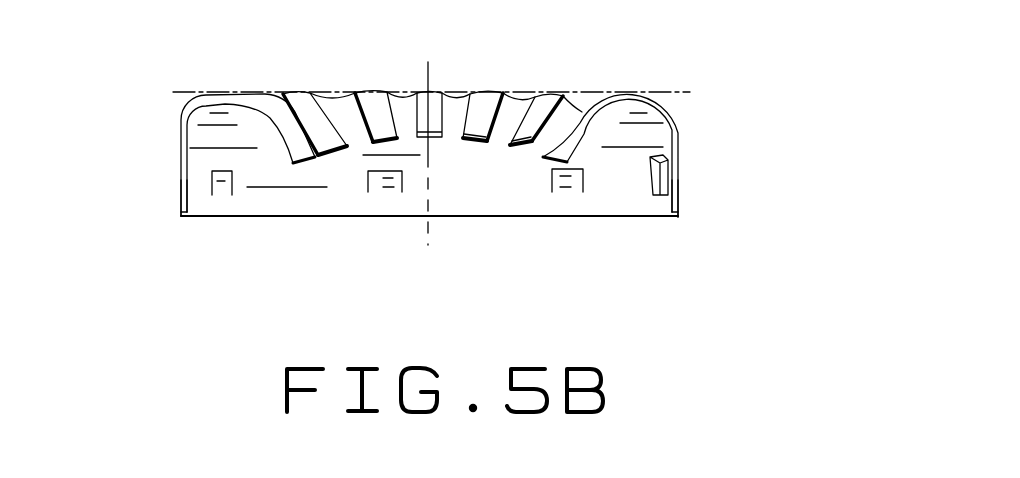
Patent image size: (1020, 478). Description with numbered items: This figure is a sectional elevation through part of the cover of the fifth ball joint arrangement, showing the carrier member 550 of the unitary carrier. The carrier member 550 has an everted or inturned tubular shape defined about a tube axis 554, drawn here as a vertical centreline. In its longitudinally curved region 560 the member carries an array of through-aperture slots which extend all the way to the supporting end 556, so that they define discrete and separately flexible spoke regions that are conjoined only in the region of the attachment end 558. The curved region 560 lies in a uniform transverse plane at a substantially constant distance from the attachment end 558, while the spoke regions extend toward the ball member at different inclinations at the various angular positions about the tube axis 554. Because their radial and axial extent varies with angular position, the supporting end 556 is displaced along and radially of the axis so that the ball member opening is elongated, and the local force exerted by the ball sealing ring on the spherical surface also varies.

The carrier member 550 is at (181, 140).
The tube axis 554 is at (427, 71).
The supporting end 556 is at (473, 140).
The attachment end 558 is at (208, 216).
The longitudinally curved region 560 is at (668, 95).